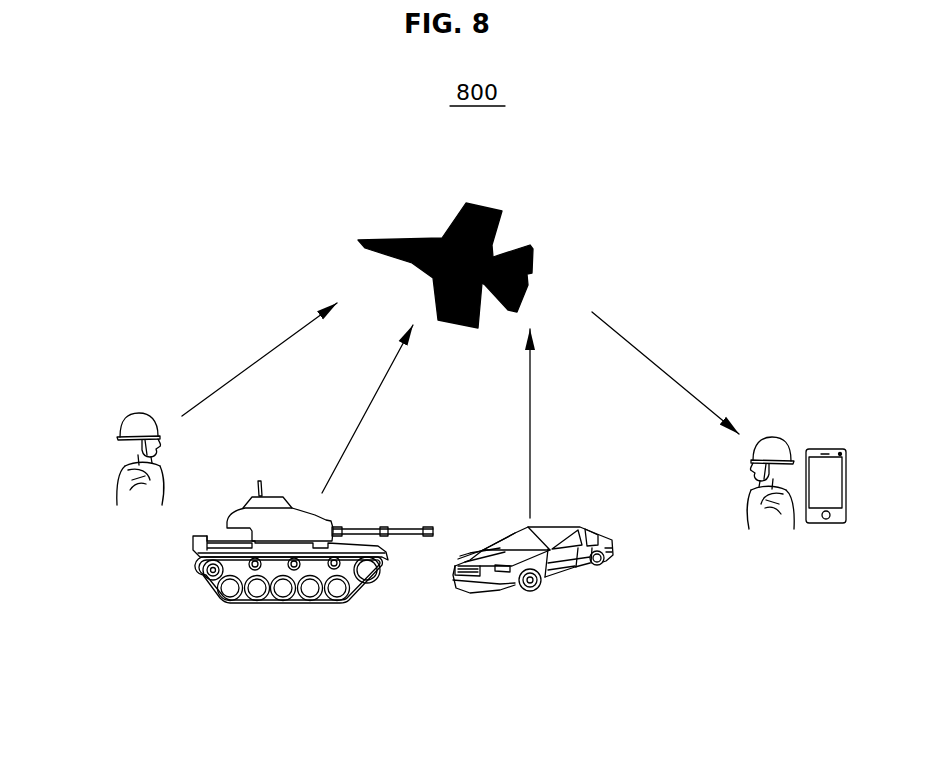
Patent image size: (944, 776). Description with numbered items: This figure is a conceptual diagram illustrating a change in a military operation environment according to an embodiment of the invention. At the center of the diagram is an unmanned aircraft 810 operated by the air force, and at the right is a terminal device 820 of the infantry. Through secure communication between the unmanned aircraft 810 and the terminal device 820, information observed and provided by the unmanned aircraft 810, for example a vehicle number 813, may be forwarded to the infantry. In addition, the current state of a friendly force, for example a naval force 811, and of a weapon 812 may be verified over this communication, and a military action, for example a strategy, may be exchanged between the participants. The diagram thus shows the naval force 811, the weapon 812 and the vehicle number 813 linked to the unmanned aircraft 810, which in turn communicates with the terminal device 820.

The unmanned aircraft 810 is at (412, 238).
The naval force 811 is at (128, 415).
The weapon 812 is at (287, 603).
The vehicle number 813 is at (490, 589).
The terminal device 820 is at (825, 449).